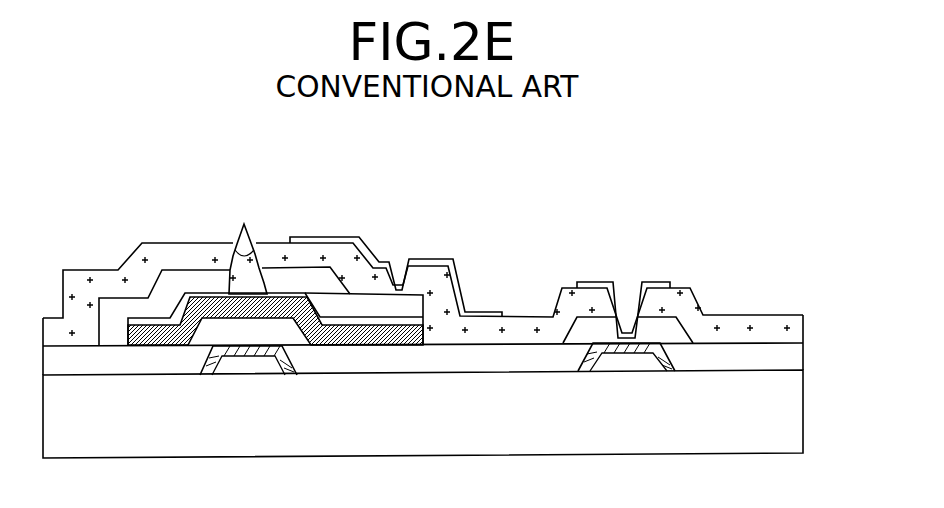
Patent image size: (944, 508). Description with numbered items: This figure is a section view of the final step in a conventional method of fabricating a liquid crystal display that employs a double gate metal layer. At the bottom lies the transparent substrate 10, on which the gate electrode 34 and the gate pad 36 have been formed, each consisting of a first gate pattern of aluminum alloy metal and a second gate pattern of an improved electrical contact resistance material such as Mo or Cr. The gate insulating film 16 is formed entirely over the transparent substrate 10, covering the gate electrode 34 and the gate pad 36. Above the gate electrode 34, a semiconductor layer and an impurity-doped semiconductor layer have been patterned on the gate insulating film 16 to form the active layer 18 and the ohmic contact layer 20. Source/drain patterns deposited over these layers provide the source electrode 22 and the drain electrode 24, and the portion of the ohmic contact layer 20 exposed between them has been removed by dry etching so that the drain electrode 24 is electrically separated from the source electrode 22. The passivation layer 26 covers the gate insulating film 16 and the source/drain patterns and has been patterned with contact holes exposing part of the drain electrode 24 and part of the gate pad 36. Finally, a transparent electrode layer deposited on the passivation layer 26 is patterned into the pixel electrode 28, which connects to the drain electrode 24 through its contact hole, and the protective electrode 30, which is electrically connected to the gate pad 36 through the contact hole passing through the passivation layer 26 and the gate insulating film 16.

The transparent substrate 10 is at (803, 420).
The gate insulating film 16 is at (803, 357).
The active layer 18 is at (338, 346).
The ohmic contact layer 20 is at (244, 226).
The source electrode 22 is at (178, 290).
The drain electrode 24 is at (331, 268).
The passivation layer 26 is at (803, 323).
The pixel electrode 28 is at (441, 260).
The protective electrode 30 is at (599, 282).
The gate electrode 34 is at (254, 382).
The gate pad 36 is at (632, 382).